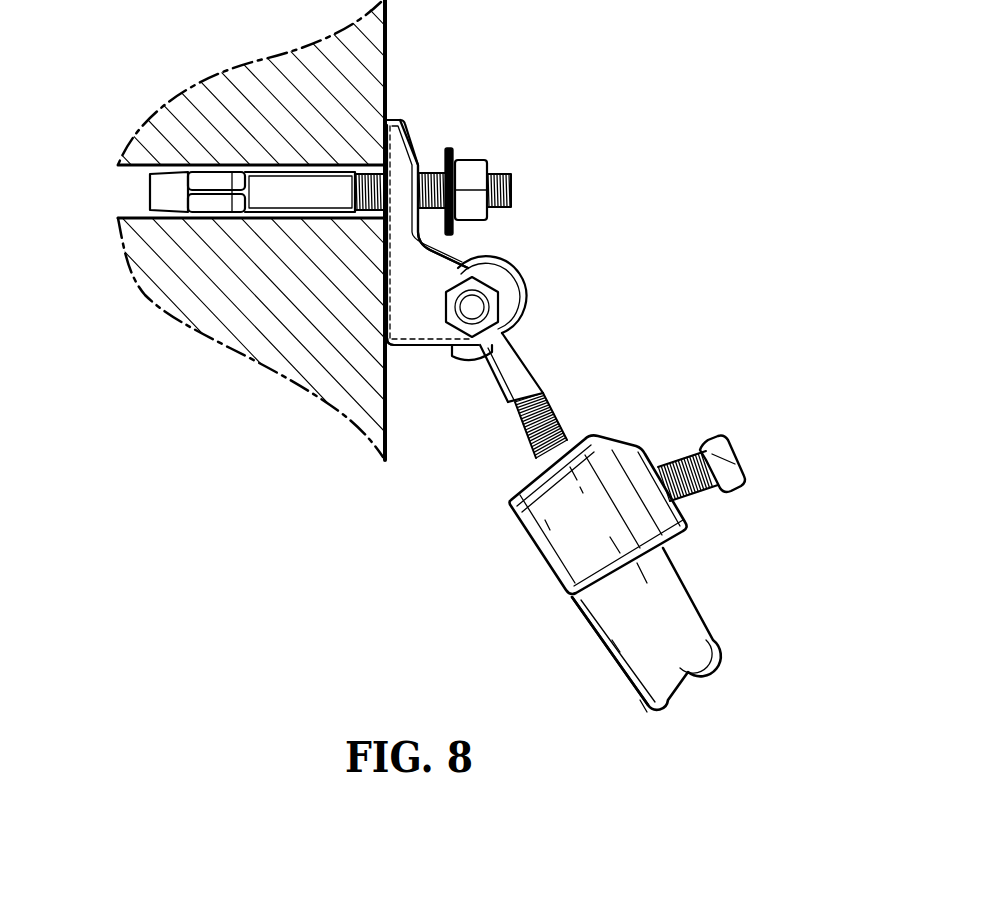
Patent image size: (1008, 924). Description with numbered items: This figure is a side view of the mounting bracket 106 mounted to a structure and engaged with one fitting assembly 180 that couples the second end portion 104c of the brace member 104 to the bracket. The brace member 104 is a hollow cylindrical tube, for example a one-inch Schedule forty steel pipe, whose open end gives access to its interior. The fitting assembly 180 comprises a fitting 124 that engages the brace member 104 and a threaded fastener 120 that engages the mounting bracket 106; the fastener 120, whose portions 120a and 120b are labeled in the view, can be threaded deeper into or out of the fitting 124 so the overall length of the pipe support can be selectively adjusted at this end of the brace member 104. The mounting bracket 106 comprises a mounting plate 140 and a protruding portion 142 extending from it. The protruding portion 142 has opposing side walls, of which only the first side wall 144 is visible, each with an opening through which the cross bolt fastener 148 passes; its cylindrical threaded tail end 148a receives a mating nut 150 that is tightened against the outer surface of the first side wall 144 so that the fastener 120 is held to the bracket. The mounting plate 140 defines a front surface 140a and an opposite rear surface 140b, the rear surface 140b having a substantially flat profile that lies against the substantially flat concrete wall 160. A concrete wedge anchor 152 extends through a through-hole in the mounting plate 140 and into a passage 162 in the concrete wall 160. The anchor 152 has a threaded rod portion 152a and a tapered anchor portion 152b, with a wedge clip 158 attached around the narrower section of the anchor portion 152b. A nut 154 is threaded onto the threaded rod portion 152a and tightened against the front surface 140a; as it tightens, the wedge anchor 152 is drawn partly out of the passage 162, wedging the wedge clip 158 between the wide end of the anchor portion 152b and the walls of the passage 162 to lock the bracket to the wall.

The brace member 104 is at (636, 724).
The second end portion 104c is at (600, 627).
The mounting bracket 106 is at (405, 372).
The fastener 120 is at (546, 365).
The eye end of arm 120a is at (514, 322).
The threaded end of arm 120b is at (557, 425).
The fitting 124 is at (632, 528).
The mounting plate 140 is at (413, 127).
The front surface 140a is at (418, 152).
The rear surface 140b is at (373, 292).
The protruding portion 142 is at (434, 348).
The first side wall 144 is at (440, 268).
The fastener 148 is at (500, 305).
The threaded tail end 148a is at (470, 318).
The nut 150 is at (489, 298).
The concrete wedge anchor 152 is at (313, 183).
The threaded rod portion 152a is at (505, 192).
The anchor portion 152b is at (177, 187).
The nut 154 is at (495, 165).
The wedge clip 158 is at (212, 205).
The concrete wall 160 is at (236, 95).
The passage 162 is at (207, 162).
The fitting assembly 180 is at (773, 497).